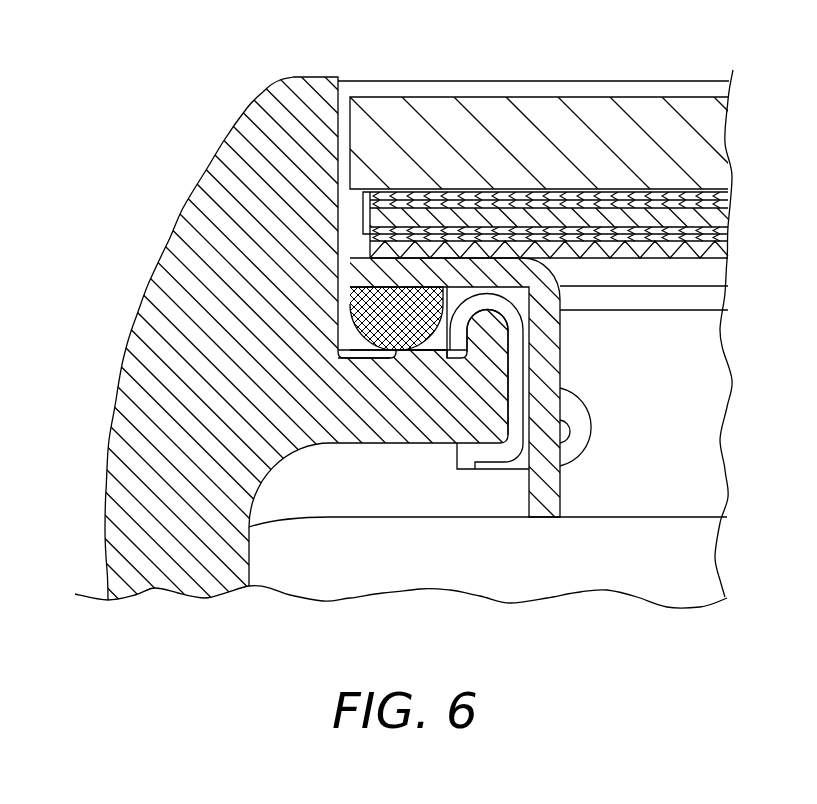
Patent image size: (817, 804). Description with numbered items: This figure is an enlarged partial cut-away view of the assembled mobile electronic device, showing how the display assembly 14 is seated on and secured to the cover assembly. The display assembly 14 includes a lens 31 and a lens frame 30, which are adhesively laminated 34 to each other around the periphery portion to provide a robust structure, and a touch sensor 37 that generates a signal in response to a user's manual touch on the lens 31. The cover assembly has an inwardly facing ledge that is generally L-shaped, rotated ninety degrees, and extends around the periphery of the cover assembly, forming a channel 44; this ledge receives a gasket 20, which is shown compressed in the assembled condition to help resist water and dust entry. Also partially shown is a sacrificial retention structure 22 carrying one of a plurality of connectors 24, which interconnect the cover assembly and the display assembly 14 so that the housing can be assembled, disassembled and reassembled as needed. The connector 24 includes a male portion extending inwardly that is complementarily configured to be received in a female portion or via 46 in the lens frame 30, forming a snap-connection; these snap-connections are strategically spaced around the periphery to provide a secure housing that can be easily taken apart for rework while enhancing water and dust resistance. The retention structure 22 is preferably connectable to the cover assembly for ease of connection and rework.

The display assembly 14 is at (122, 492).
The gasket 20 is at (398, 320).
The sacrificial retention structure 22 is at (488, 302).
The connector 24 is at (572, 407).
The lens frame 30 is at (545, 420).
The lens 31 is at (443, 118).
The adhesive lamination 34 is at (390, 248).
The touch sensor 37 is at (363, 215).
The channel 44 is at (393, 358).
The via 46 is at (545, 357).